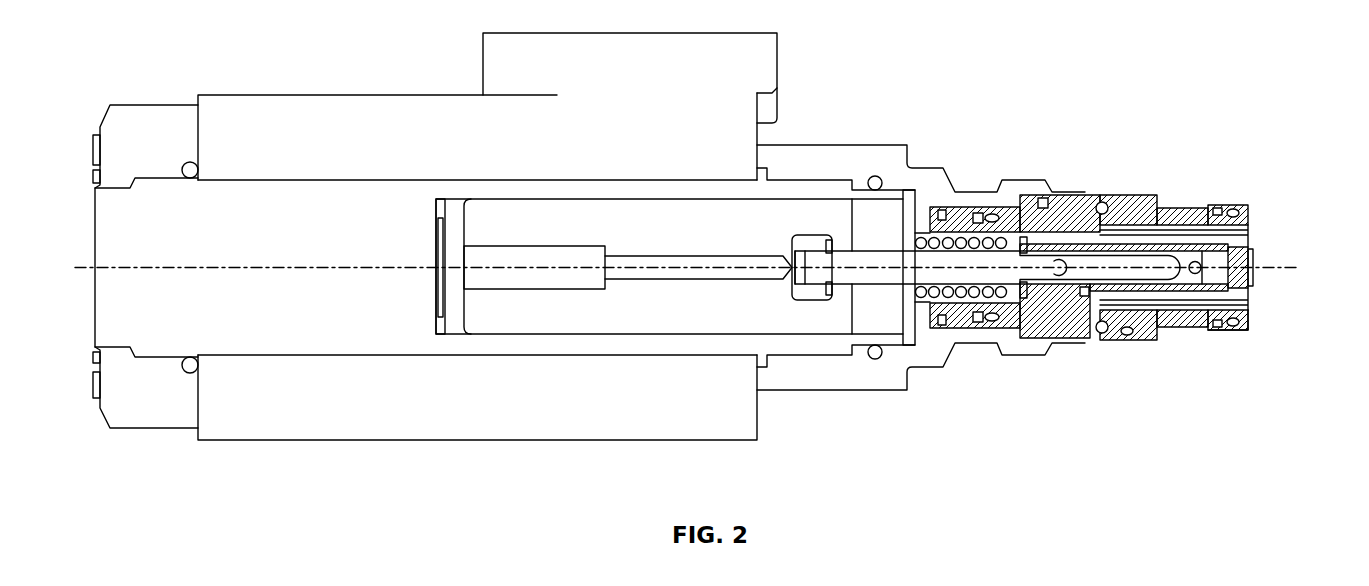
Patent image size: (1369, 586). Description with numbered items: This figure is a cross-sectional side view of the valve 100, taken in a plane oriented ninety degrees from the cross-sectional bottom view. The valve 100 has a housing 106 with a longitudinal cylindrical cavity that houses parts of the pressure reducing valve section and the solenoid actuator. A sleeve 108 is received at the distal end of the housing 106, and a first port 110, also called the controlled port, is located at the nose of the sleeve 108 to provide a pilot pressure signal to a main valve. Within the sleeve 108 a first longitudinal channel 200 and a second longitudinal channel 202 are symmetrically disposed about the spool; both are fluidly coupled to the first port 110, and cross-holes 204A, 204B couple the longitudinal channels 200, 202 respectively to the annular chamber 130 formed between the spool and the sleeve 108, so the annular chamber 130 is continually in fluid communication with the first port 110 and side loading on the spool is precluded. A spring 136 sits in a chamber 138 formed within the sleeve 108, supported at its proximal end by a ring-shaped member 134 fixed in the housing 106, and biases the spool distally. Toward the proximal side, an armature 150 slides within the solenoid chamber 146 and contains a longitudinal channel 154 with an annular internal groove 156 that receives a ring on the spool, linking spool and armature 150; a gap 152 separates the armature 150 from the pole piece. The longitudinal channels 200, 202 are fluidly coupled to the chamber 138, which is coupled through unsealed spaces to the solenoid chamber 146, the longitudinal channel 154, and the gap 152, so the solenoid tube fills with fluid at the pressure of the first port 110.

The valve 100 is at (346, 62).
The housing 106 is at (848, 145).
The sleeve 108 is at (1180, 207).
The first port 110 is at (1260, 279).
The annular chamber 130 is at (1150, 286).
The ring-shaped member 134 is at (911, 190).
The spring 136 is at (1003, 299).
The chamber 138 is at (965, 302).
The solenoid chamber 146 is at (875, 326).
The armature 150 is at (632, 318).
The gap 152 is at (455, 322).
The longitudinal channel 154 is at (711, 277).
The annular internal groove 156 is at (815, 295).
The first longitudinal channel 200 is at (1252, 227).
The second longitudinal channel 202 is at (1250, 304).
The cross-hole 204A is at (1103, 243).
The cross-hole 204B is at (1097, 291).